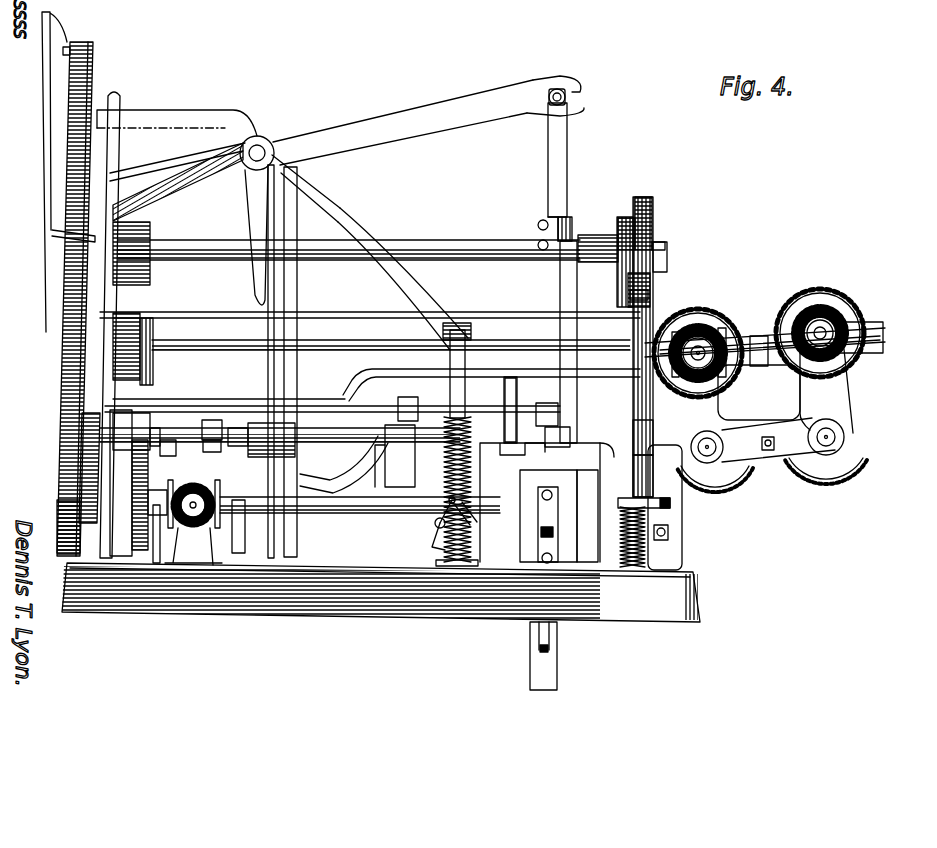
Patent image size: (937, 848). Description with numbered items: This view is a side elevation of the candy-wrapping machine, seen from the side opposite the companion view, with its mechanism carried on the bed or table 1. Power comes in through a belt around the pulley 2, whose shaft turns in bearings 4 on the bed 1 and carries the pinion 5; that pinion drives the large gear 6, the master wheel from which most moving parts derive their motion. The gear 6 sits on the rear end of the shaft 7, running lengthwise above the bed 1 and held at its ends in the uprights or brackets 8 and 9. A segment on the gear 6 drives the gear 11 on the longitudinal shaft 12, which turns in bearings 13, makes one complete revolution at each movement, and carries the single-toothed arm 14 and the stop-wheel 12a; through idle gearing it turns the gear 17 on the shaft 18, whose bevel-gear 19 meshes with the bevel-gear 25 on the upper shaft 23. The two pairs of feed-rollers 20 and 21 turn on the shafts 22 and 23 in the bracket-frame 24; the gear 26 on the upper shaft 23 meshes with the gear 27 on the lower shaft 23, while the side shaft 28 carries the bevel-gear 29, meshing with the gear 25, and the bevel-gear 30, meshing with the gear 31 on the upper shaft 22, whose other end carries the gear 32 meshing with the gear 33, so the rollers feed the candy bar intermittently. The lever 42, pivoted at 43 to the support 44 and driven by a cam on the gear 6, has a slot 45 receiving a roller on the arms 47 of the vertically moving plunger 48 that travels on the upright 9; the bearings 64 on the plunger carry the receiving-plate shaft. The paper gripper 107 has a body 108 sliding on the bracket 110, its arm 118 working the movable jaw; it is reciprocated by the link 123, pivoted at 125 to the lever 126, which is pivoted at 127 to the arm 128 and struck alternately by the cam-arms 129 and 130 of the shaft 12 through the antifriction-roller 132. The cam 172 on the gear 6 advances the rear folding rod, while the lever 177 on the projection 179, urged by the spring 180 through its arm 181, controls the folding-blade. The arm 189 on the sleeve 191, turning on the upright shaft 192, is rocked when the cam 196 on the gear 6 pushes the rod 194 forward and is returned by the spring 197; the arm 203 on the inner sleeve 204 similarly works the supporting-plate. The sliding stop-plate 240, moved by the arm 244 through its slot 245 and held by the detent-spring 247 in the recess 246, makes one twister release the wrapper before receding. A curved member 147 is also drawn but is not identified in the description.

The bed or table 1 is at (702, 592).
The pulley 2 is at (140, 481).
The bearings 4 is at (158, 539).
The pinion 5 is at (57, 501).
The gear 6 is at (62, 354).
The shaft 7 is at (348, 241).
The upright or bracket 8 is at (140, 281).
The upright or bracket 9 is at (581, 236).
The gear 11 is at (70, 459).
The longitudinal shaft 12 is at (338, 428).
The stop-wheel 12a is at (170, 456).
The bearings 13 is at (262, 457).
The arm 14 is at (147, 418).
The gear 17 is at (153, 328).
The longitudinal shaft 18 is at (360, 341).
The bevel-gear 19 is at (676, 378).
The feed-rollers 20 is at (846, 315).
The feed-rollers 21 is at (724, 330).
The shaft 22 is at (812, 323).
The shaft 23 is at (700, 362).
The bracket-frame 24 is at (810, 393).
The bevel-gear 25 is at (708, 330).
The gear 26 is at (686, 311).
The gear 27 is at (741, 480).
The side shaft 28 is at (768, 355).
The bevel-gear 29 is at (756, 335).
The bevel-gear 30 is at (860, 325).
The bevel-gear 31 is at (805, 362).
The gear 32 is at (800, 300).
The gear 33 is at (874, 440).
The lever 42 is at (371, 120).
The pivot 43 is at (259, 147).
The support 44 is at (247, 213).
The slot 45 is at (578, 96).
The arms 47 is at (547, 174).
The plunger 48 is at (571, 220).
The bearings 64 is at (472, 330).
The gripper 107 is at (516, 456).
The slide or body 108 is at (506, 445).
The bracket 110 is at (616, 480).
The arm 118 is at (505, 392).
The link 123 is at (568, 430).
The pivot 125 is at (559, 406).
The lever 126 is at (378, 405).
The pivot 127 is at (272, 424).
The arm 128 is at (316, 428).
The cam-arm 129 is at (213, 452).
The cam-arm 130 is at (416, 458).
The antifriction-roller 132 is at (416, 400).
The curved arm 147 is at (455, 297).
The cam 172 is at (47, 118).
The lever 177 is at (449, 499).
The projection 179 is at (473, 513).
The spring 180 is at (432, 546).
The arm 181 is at (435, 526).
The arm 189 is at (679, 491).
The vertical sleeve 191 is at (645, 476).
The upright shaft 192 is at (650, 297).
The rod 194 is at (312, 313).
The cam 196 is at (52, 239).
The spring 197 is at (652, 289).
The arm 203 is at (652, 508).
The sleeve 204 is at (646, 452).
The stop-plate 240 is at (557, 670).
The arm 244 is at (540, 648).
The slot 245 is at (550, 631).
The detent-recess 246 is at (547, 565).
The detent-spring 247 is at (560, 545).